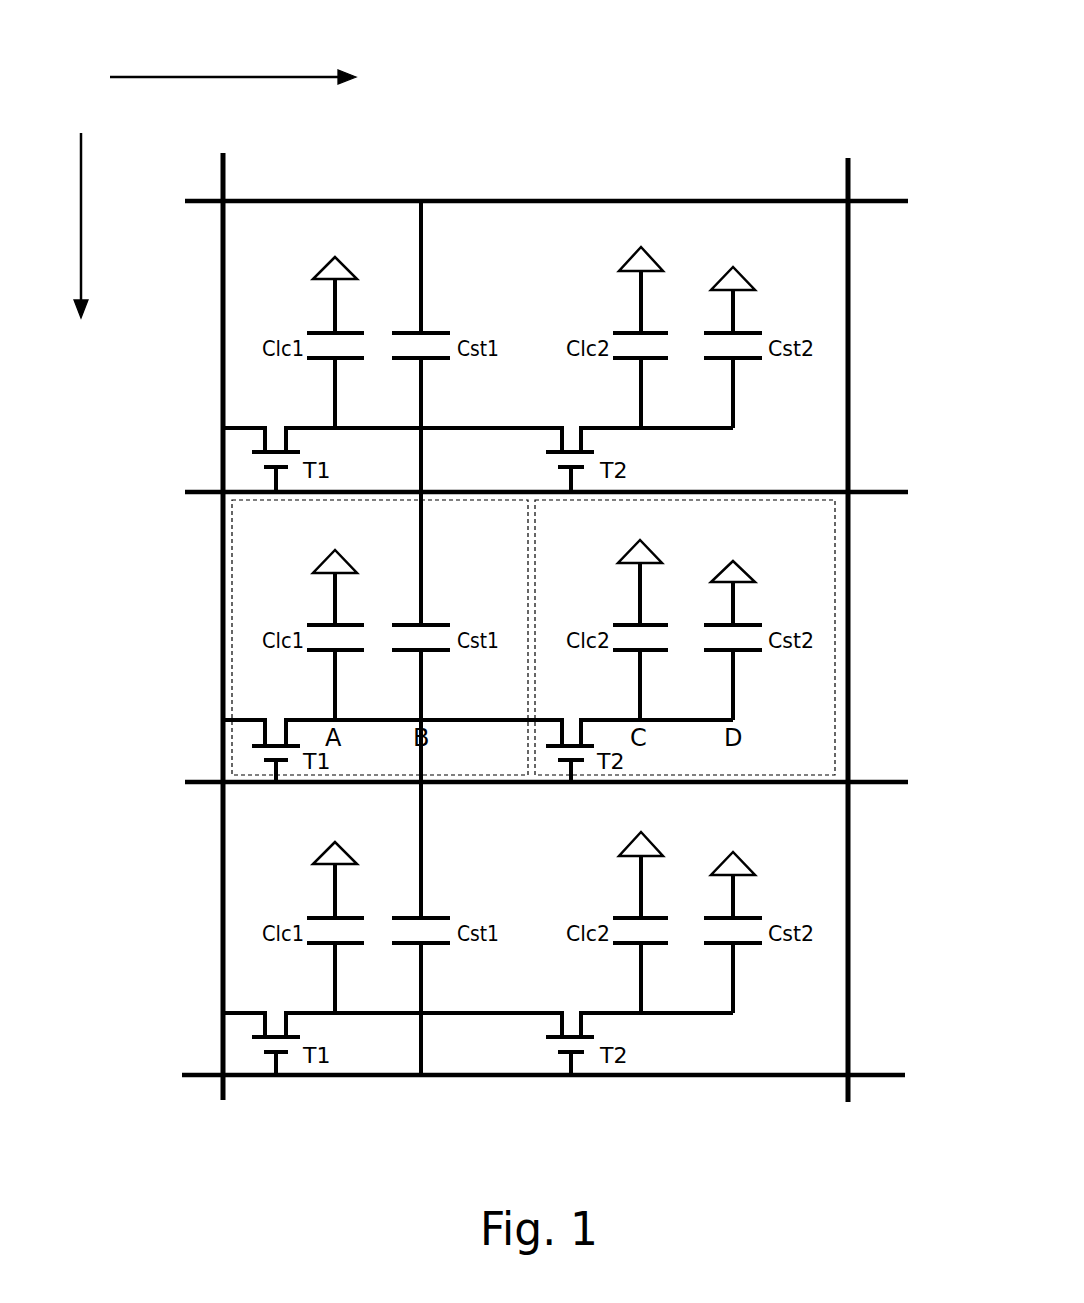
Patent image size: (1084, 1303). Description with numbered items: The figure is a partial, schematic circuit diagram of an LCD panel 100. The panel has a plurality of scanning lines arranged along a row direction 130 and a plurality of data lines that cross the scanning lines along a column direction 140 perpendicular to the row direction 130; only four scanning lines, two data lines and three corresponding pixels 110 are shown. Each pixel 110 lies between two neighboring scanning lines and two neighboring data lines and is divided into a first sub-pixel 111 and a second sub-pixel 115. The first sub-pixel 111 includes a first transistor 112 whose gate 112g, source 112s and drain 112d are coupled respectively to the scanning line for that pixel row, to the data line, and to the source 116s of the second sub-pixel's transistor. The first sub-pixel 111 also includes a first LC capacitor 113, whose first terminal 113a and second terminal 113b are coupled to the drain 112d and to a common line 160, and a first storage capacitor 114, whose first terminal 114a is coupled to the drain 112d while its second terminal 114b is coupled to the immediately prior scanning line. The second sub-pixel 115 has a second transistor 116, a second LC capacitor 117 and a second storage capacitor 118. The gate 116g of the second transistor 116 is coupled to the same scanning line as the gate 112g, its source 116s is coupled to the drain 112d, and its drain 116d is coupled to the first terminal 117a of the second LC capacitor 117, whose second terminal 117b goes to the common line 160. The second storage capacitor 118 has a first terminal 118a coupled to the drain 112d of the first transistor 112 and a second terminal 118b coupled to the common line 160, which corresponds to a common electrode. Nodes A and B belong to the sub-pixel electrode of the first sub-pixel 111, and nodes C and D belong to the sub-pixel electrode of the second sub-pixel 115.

The LCD panel 100 is at (582, 50).
The pixel 110 is at (870, 337).
The first sub-pixel 111 is at (252, 526).
The second sub-pixel 115 is at (817, 543).
The transistor T1 112 is at (234, 753).
The source 112s is at (245, 723).
The drain 112d is at (297, 717).
The gate 112g is at (281, 762).
The LC capacitor Clc1 113 is at (323, 646).
The first terminal 113a is at (334, 668).
The second terminal 113b is at (334, 598).
The storage capacitor Cst1 114 is at (432, 637).
The first terminal 114a is at (422, 680).
The second terminal 114b is at (422, 600).
The transistor T2 116 is at (545, 758).
The source 116s is at (545, 722).
The drain 116d is at (606, 718).
The gate 116g is at (578, 763).
The LC capacitor Clc2 117 is at (627, 641).
The first terminal 117a is at (639, 668).
The second terminal 117b is at (639, 606).
The storage capacitor Cst2 118 is at (739, 651).
The first terminal 118a is at (735, 675).
The second terminal 118b is at (735, 612).
The row direction 130 is at (80, 242).
The column direction 140 is at (257, 78).
The common line 160 is at (340, 567).